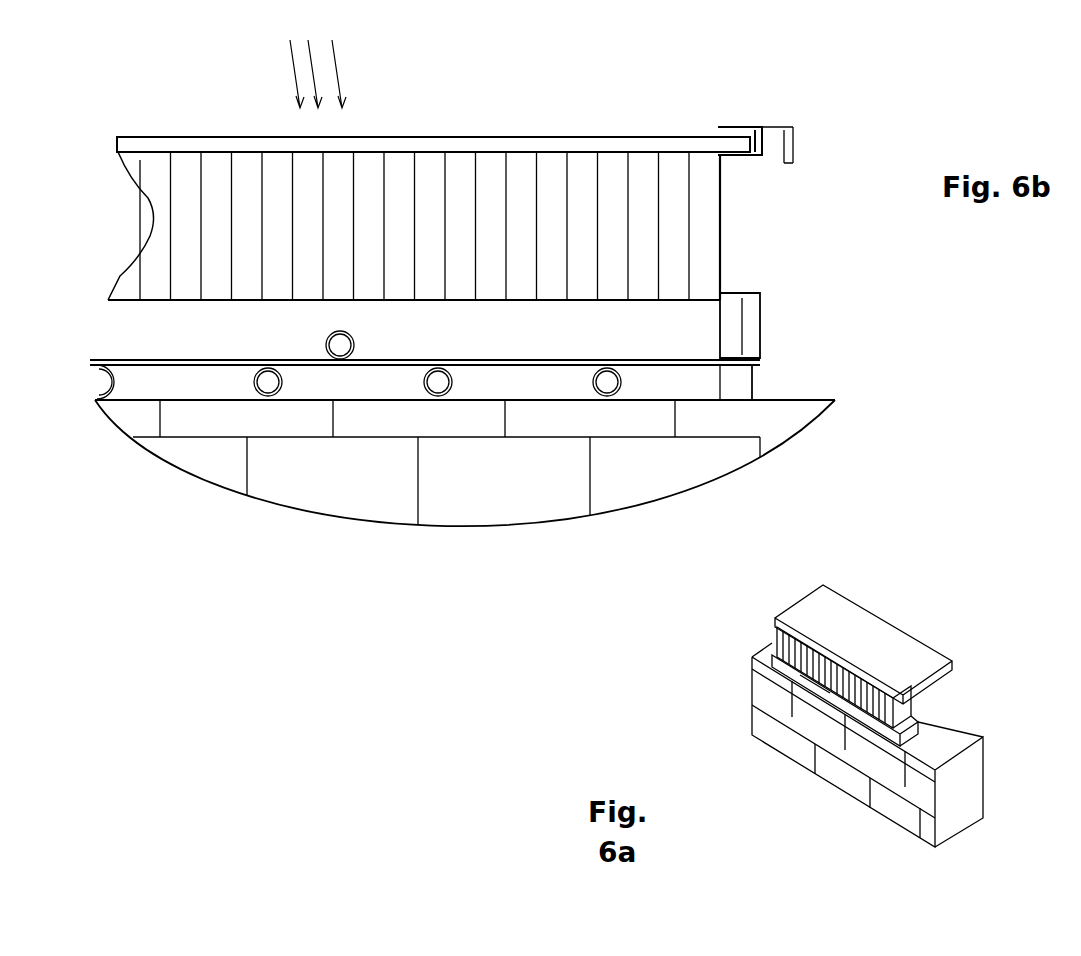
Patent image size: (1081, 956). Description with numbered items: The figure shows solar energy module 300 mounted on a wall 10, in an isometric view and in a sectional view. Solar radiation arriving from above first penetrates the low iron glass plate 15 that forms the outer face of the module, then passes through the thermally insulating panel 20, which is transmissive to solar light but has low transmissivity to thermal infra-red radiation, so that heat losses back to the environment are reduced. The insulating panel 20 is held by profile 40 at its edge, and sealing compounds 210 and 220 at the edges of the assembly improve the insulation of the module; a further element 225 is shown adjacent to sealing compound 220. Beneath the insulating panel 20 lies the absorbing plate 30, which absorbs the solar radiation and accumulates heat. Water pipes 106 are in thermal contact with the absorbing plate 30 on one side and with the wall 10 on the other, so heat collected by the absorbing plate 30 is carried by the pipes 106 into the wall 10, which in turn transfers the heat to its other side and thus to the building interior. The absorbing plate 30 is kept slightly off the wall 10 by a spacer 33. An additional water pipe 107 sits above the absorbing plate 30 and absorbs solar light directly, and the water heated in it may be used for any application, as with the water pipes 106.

In FIG. 6b, the solar energy module 300 is at (242, 125).
In FIG. 6a, the solar energy module 300 is at (918, 586).
In FIG. 6b, the low iron glass plate 15 is at (570, 137).
In FIG. 6b, the thermally insulating panel 20 is at (187, 212).
In FIG. 6a, the thermally insulating panel 20 is at (776, 632).
In FIG. 6b, the profile 40 is at (795, 126).
In FIG. 6b, the sealing compound 210 is at (718, 128).
In FIG. 6b, the sealing compound 220 is at (762, 320).
In FIG. 6b, the end box partition 225 is at (728, 328).
In FIG. 6b, the absorbing plate 30 is at (543, 363).
In FIG. 6a, the absorbing plate 30 is at (862, 720).
In FIG. 6b, the spacer 33 is at (753, 377).
In FIG. 6b, the water pipes 106 is at (428, 393).
In FIG. 6a, the water pipes 106 is at (810, 688).
In FIG. 6b, the water pipe 107 is at (340, 350).
In FIG. 6b, the wall 10 is at (570, 455).
In FIG. 6a, the wall 10 is at (768, 697).